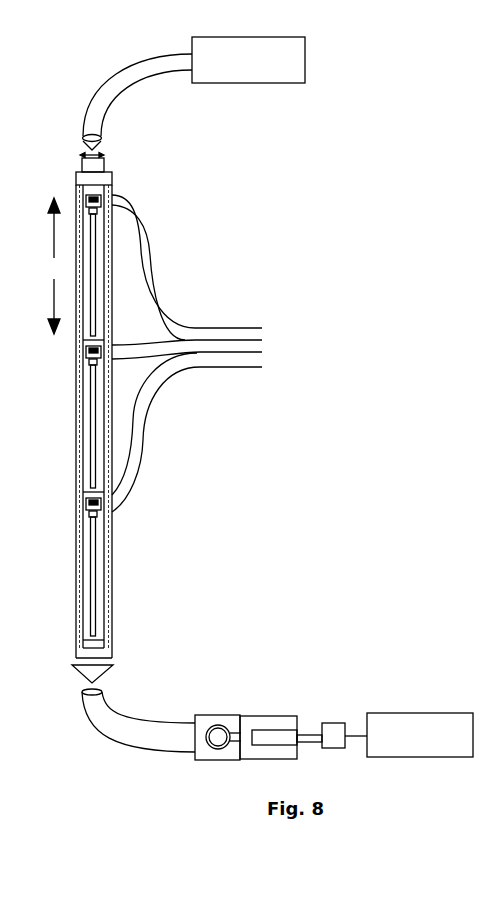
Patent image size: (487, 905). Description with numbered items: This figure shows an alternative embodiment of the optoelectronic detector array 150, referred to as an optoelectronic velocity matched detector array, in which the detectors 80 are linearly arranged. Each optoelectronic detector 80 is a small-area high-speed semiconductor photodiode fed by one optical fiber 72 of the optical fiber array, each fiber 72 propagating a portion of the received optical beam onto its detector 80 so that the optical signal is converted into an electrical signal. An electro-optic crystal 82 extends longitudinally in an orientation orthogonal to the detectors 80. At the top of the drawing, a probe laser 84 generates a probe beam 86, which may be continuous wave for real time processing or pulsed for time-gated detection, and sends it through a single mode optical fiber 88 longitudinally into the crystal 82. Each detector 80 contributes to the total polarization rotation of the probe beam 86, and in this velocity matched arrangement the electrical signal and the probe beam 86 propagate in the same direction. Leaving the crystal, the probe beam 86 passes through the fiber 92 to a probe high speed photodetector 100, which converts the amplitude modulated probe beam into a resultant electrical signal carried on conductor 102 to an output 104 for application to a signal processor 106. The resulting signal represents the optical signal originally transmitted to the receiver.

The optical fiber 72 is at (143, 348).
The optoelectronic detector 80 is at (100, 201).
The electro-optic crystal 82 is at (112, 178).
The probe laser 84 is at (305, 58).
The probe beam 86 is at (104, 165).
The single mode optical fiber 88 is at (139, 84).
The optical fiber 92 is at (146, 716).
The probe high speed photodetector 100 is at (218, 733).
The conductor 102 is at (310, 727).
The output 104 is at (346, 724).
The signal processor 106 is at (428, 712).
The optoelectronic detector array 150 is at (472, 197).